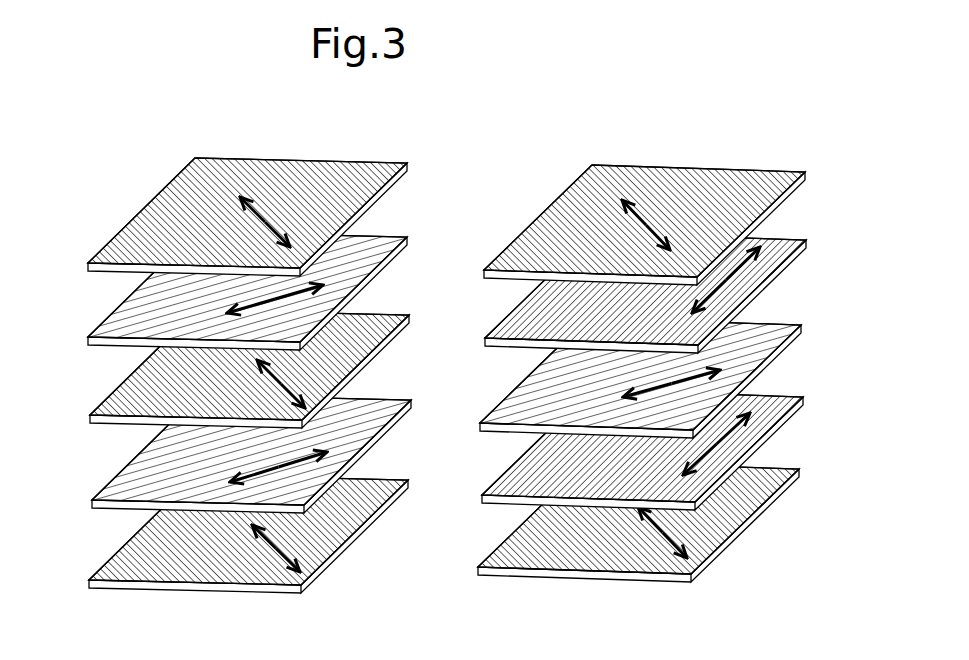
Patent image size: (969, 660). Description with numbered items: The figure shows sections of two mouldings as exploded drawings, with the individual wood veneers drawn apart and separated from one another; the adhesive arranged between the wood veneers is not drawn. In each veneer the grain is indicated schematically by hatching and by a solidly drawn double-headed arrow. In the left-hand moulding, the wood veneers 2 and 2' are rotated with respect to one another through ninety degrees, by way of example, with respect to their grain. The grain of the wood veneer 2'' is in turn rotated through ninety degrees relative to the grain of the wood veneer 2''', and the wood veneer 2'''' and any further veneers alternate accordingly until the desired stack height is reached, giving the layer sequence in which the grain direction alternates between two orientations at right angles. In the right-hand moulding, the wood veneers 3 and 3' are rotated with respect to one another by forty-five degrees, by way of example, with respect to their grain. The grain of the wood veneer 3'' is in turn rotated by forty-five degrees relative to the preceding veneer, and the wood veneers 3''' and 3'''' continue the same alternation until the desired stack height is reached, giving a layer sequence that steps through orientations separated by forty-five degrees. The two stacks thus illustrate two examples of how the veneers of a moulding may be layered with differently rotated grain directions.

The wood veneer 2 is at (247, 217).
The wood veneer 2' is at (241, 291).
The wood veneer 2'' is at (239, 369).
The wood veneer 2''' is at (243, 454).
The wood veneer 2'''' is at (238, 534).
The wood veneer 3 is at (657, 225).
The wood veneer 3' is at (658, 293).
The wood veneer 3'' is at (653, 378).
The wood veneer 3''' is at (663, 450).
The wood veneer 3'''' is at (645, 522).